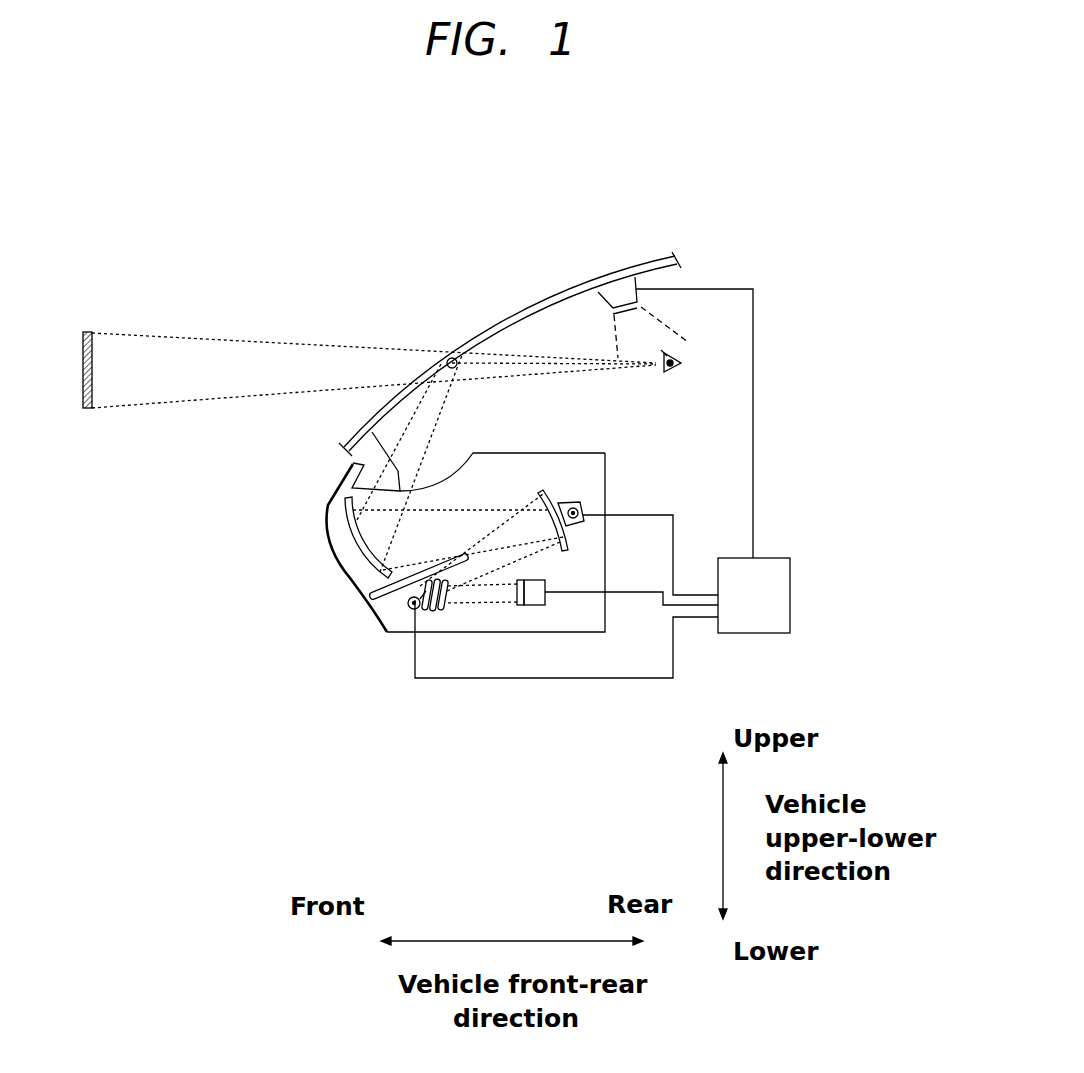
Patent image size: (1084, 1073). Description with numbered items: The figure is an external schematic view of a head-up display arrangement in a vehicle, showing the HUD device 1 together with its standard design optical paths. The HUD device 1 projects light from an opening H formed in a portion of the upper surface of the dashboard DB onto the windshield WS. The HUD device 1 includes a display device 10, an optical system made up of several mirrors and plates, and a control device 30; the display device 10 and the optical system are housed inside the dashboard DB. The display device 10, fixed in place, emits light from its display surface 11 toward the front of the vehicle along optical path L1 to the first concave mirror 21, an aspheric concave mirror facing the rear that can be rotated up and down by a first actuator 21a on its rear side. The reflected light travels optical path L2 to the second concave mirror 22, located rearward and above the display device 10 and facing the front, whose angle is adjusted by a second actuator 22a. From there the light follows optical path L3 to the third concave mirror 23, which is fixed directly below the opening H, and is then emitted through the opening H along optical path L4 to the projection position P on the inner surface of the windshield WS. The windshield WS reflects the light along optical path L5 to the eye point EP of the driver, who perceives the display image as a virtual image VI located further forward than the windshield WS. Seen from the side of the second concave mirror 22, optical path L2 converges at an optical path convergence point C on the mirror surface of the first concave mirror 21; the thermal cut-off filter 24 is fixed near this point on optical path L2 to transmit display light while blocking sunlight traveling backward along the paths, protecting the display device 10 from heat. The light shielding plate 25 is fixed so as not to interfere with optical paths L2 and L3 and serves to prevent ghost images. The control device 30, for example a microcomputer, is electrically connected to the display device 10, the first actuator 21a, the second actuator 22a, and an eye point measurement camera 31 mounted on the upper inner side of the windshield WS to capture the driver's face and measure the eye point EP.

The HUD device 1 is at (288, 752).
The display device 10 is at (533, 606).
The display surface 11 is at (517, 593).
The first concave mirror 21 is at (437, 611).
The first actuator 21a is at (410, 606).
The second concave mirror 22 is at (557, 490).
The second actuator 22a is at (583, 506).
The third concave mirror 23 is at (345, 540).
The thermal cut-off filter 24 is at (446, 611).
The light shielding plate 25 is at (373, 590).
The control device 30 is at (758, 634).
The eye point measurement camera 31 is at (618, 288).
The windshield WS is at (520, 318).
The projection position P is at (451, 357).
The opening H is at (346, 440).
The eye point EP is at (684, 360).
The virtual image VI is at (80, 395).
The dashboard DB is at (325, 525).
The optical path convergence point C is at (377, 600).
The optical path L1 is at (480, 606).
The optical path L2 is at (524, 558).
The optical path L3 is at (455, 510).
The optical path L4 is at (442, 426).
The optical path L5 is at (550, 375).